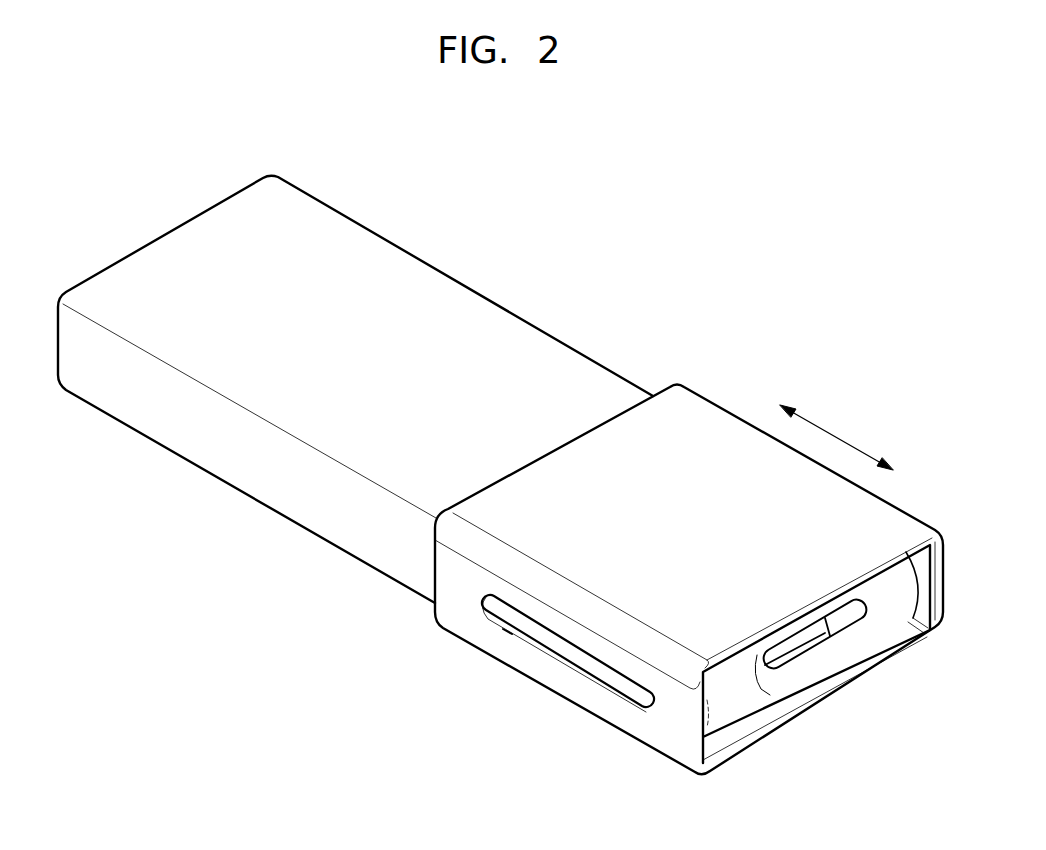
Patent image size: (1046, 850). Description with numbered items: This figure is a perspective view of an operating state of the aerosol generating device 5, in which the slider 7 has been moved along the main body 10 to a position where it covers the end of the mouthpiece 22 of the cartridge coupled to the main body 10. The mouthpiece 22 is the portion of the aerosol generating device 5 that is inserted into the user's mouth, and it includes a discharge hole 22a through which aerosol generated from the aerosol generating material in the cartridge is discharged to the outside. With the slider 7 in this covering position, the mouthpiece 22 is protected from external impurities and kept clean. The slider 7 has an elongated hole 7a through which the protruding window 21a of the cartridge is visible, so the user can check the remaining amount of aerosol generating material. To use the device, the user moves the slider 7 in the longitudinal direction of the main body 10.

The aerosol generating device 5 is at (602, 216).
The main body 10 is at (345, 535).
The mouthpiece 22 is at (732, 702).
The discharge hole 22a is at (793, 645).
The slider 7 is at (543, 672).
The elongated hole 7a is at (500, 632).
The protruding window 21a is at (607, 670).